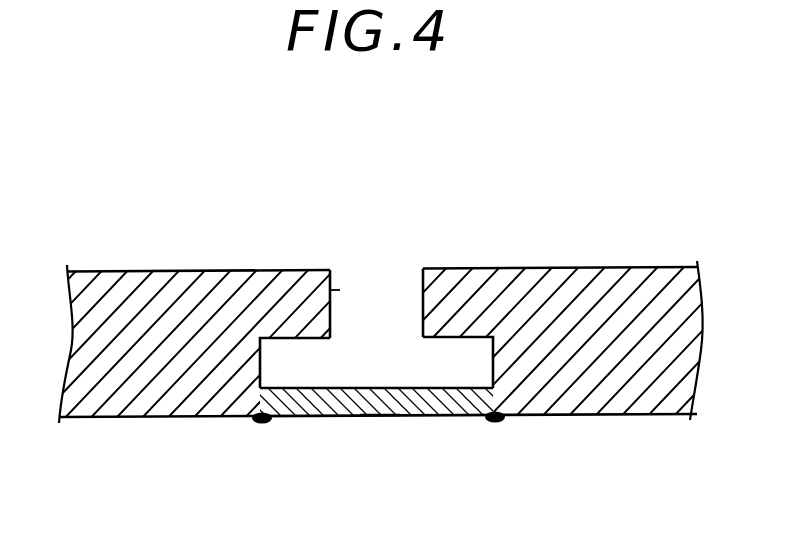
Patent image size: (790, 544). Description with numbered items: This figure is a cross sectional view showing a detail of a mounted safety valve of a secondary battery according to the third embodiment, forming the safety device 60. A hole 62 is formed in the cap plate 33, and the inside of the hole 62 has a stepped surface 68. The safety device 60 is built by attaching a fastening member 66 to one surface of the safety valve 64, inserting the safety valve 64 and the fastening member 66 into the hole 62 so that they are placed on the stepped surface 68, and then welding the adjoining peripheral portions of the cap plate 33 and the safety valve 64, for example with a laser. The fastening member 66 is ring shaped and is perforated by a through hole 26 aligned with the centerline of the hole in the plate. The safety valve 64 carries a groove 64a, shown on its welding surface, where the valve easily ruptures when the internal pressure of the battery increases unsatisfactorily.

The cap plate 33 is at (110, 283).
The through hole 26 is at (332, 325).
The hole 62 is at (335, 294).
The stepped surface 68 is at (276, 338).
The fastening member 66 is at (244, 418).
The safety valve 64 is at (313, 418).
The groove 64a is at (378, 402).
The safety device 60 is at (433, 437).